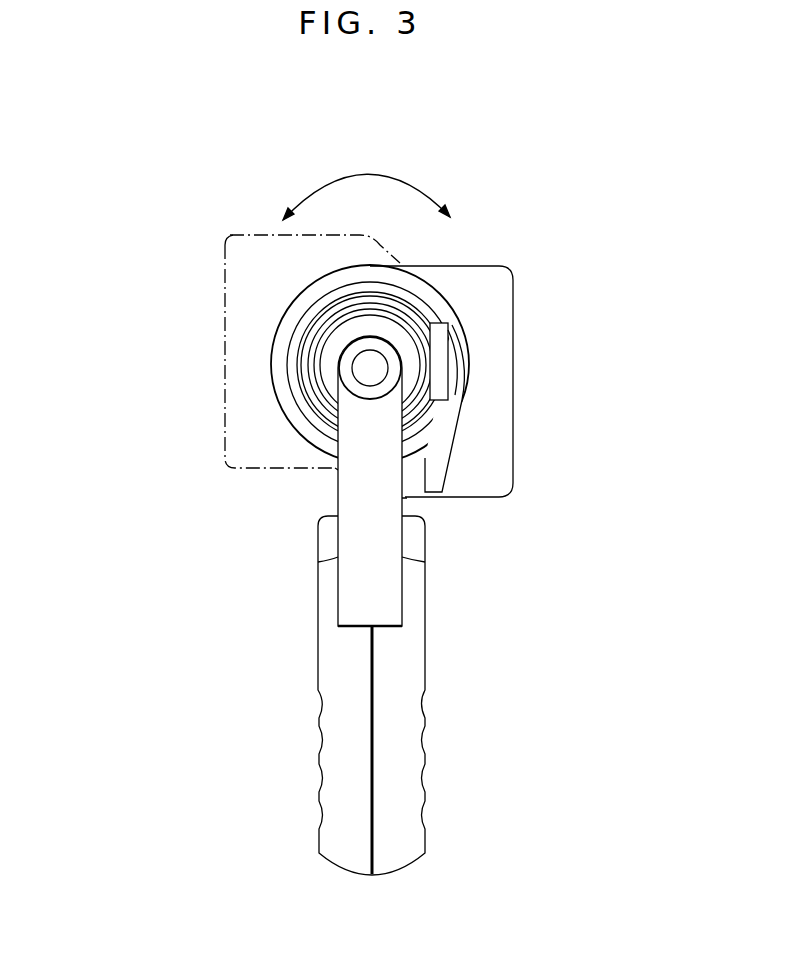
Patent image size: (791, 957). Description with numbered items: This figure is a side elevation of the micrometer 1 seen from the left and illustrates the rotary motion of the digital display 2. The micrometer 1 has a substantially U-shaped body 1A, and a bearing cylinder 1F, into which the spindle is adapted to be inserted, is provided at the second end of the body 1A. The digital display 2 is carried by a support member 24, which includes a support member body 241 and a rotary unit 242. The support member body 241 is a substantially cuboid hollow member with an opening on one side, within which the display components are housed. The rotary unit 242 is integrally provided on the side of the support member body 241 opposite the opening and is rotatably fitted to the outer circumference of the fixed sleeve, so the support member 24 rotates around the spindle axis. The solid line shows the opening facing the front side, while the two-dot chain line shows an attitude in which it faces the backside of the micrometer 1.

The micrometer 1 is at (89, 208).
The body 1A is at (415, 608).
The bearing cylinder 1F is at (327, 377).
The digital display 2 is at (225, 262).
The support member 24 is at (405, 342).
The support member body 241 is at (498, 283).
The rotary unit 242 is at (422, 287).